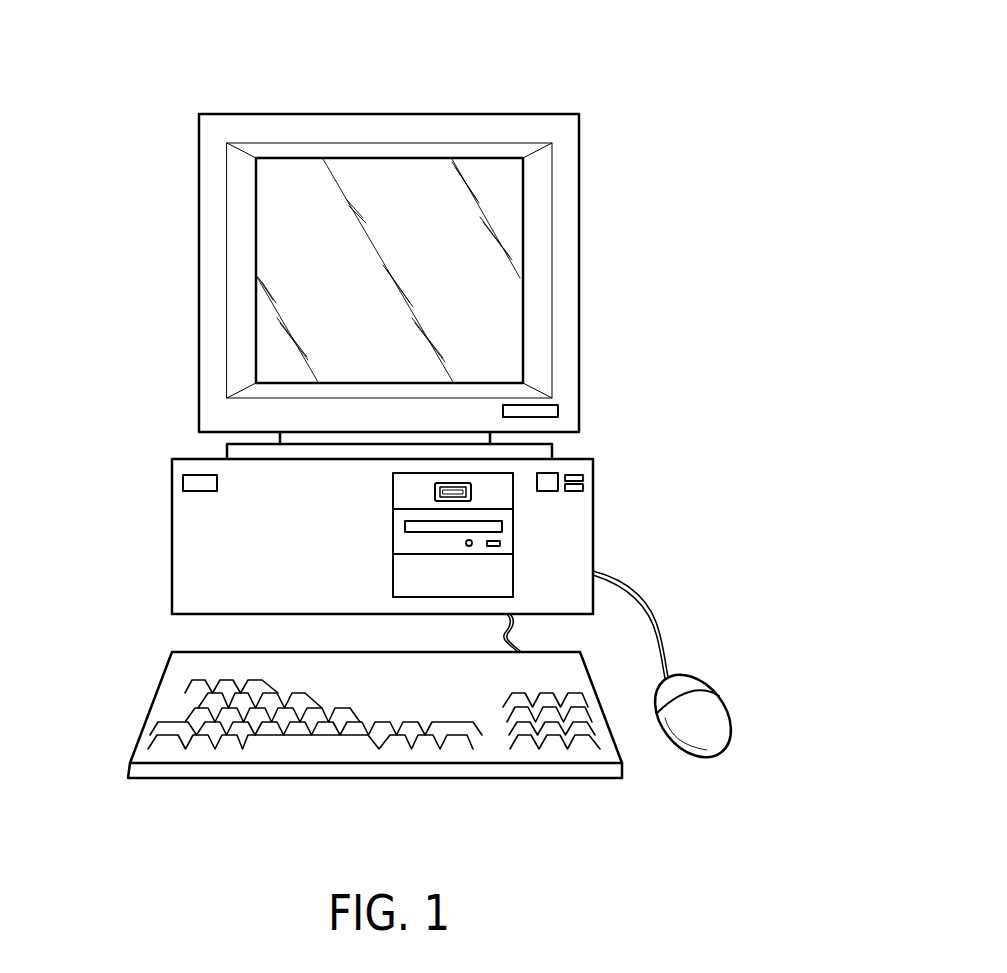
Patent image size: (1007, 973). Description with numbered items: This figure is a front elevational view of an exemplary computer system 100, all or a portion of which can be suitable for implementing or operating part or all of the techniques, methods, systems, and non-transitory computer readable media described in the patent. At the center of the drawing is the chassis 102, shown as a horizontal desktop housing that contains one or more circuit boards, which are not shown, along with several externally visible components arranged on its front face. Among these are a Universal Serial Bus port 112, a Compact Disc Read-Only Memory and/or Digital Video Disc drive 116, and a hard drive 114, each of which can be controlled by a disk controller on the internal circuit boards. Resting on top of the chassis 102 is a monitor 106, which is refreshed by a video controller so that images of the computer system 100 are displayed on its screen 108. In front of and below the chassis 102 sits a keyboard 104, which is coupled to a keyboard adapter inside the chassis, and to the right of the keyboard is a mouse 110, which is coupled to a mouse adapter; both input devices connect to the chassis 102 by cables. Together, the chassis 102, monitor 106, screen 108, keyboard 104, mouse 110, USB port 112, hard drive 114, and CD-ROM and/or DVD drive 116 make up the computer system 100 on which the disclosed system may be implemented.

The computer system 100 is at (573, 87).
The chassis 102 is at (172, 539).
The keyboard 104 is at (155, 697).
The monitor 106 is at (275, 114).
The screen 108 is at (303, 277).
The mouse 110 is at (713, 707).
The Universal Serial Bus (USB) port 112 is at (473, 487).
The hard drive 114 is at (503, 575).
The CD-ROM and/or DVD drive 116 is at (503, 532).